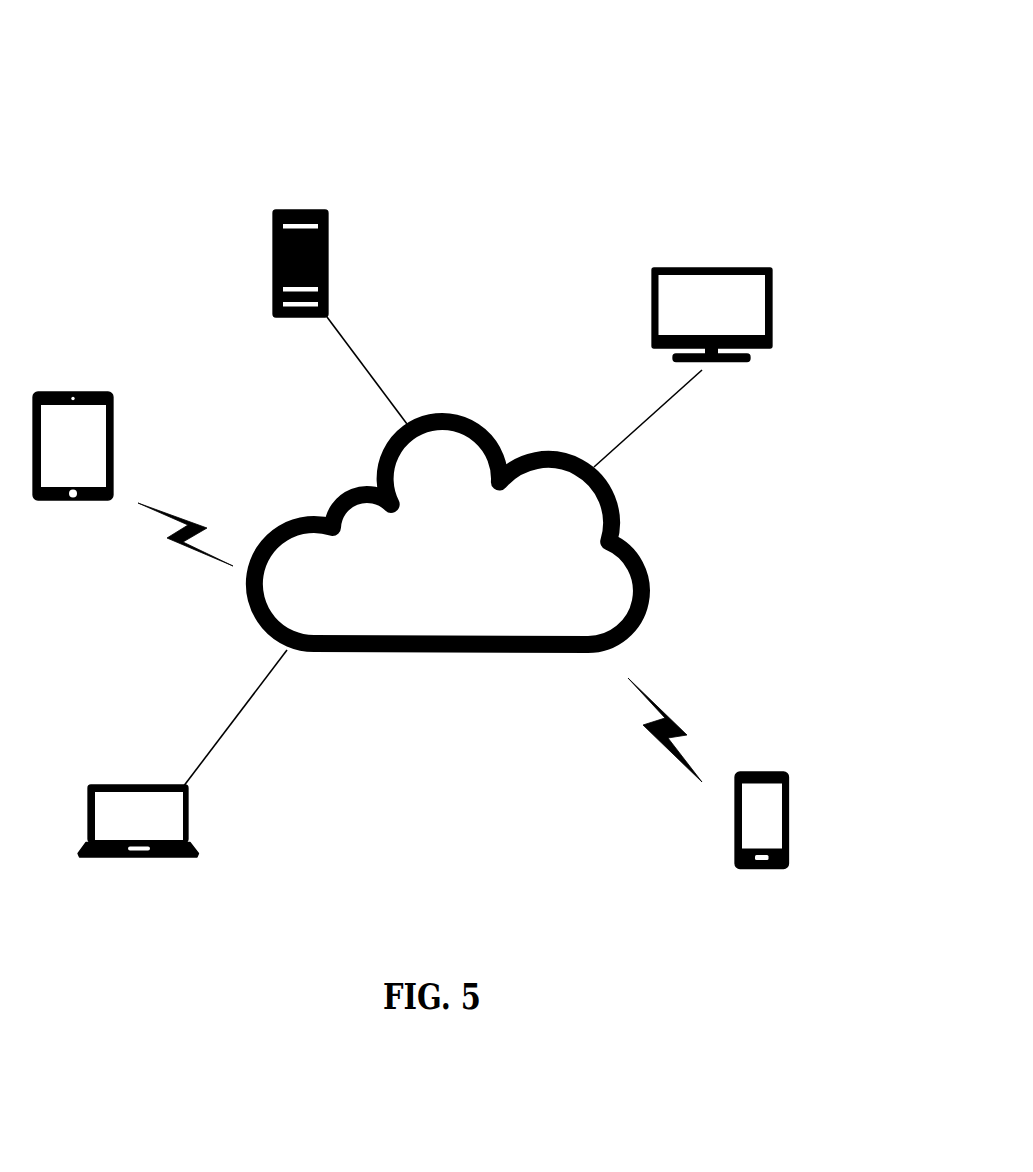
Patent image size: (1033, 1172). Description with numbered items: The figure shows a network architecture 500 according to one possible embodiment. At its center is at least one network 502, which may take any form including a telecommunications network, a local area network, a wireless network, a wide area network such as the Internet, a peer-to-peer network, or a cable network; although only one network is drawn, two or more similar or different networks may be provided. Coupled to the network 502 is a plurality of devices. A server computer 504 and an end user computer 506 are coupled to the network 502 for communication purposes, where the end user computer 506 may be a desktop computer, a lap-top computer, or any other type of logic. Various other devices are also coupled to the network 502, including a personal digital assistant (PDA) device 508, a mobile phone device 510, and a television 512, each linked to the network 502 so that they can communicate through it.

The network architecture 500 is at (73, 80).
The network 502 is at (462, 653).
The server computer 504 is at (300, 210).
The end user computer 506 is at (135, 785).
The personal digital assistant (PDA) device 508 is at (73, 392).
The mobile phone device 510 is at (753, 772).
The television 512 is at (717, 268).